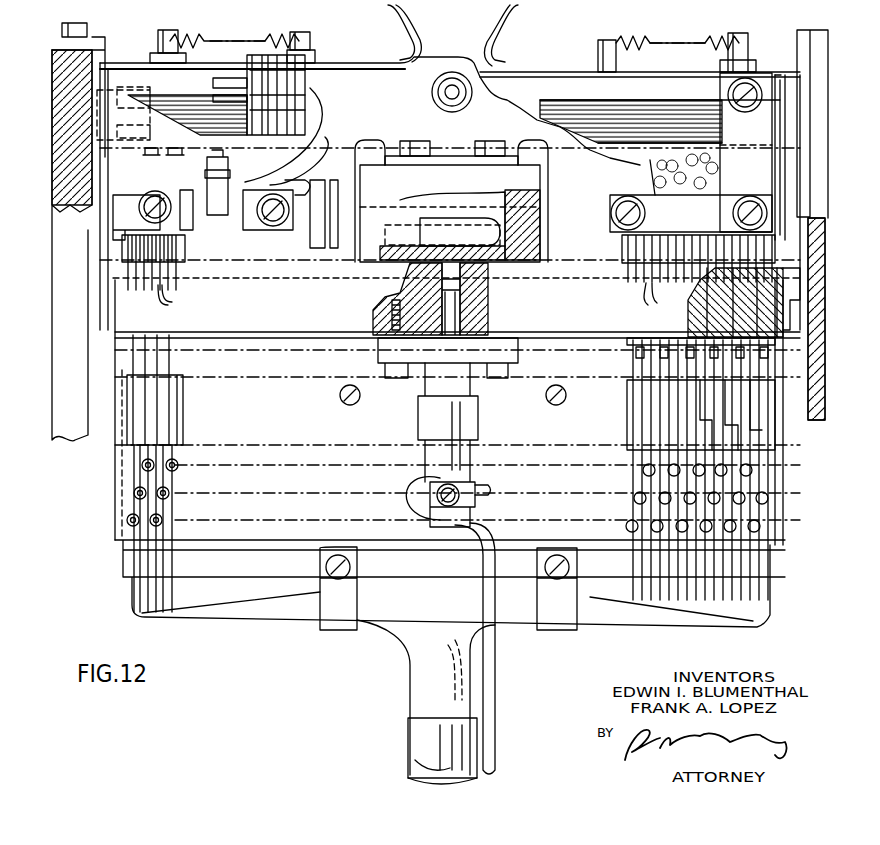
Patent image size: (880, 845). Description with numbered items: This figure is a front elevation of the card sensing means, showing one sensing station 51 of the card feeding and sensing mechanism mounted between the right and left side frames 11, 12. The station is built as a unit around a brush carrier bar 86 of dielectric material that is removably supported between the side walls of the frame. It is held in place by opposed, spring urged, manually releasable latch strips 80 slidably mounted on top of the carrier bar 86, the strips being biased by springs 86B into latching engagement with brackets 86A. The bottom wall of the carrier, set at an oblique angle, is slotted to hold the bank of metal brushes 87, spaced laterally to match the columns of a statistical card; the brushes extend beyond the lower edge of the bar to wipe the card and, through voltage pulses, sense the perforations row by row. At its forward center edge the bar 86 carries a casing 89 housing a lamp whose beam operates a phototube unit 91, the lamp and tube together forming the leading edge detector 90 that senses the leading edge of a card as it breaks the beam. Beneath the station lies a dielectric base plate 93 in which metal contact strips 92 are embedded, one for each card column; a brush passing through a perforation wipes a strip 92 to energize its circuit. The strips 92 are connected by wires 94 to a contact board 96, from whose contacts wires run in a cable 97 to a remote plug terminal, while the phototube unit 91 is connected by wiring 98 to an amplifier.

The right side frame 11 is at (78, 452).
The left side frame 12 is at (812, 422).
The sensing station 51 is at (438, 50).
The latch strips 80 is at (473, 33).
The brush carrier bar 86 is at (580, 85).
The brackets 86A is at (798, 55).
The springs 86B is at (302, 30).
The bank of brushes 87 is at (185, 240).
The casing 89 is at (385, 182).
The leading edge detector 90 is at (452, 146).
The phototube unit 91 is at (450, 322).
The contact strips 92 is at (407, 302).
The base plate 93 is at (318, 325).
The wires 94 is at (175, 452).
The contact board 96 is at (243, 565).
The cable 97 is at (410, 700).
The wiring 98 is at (483, 563).